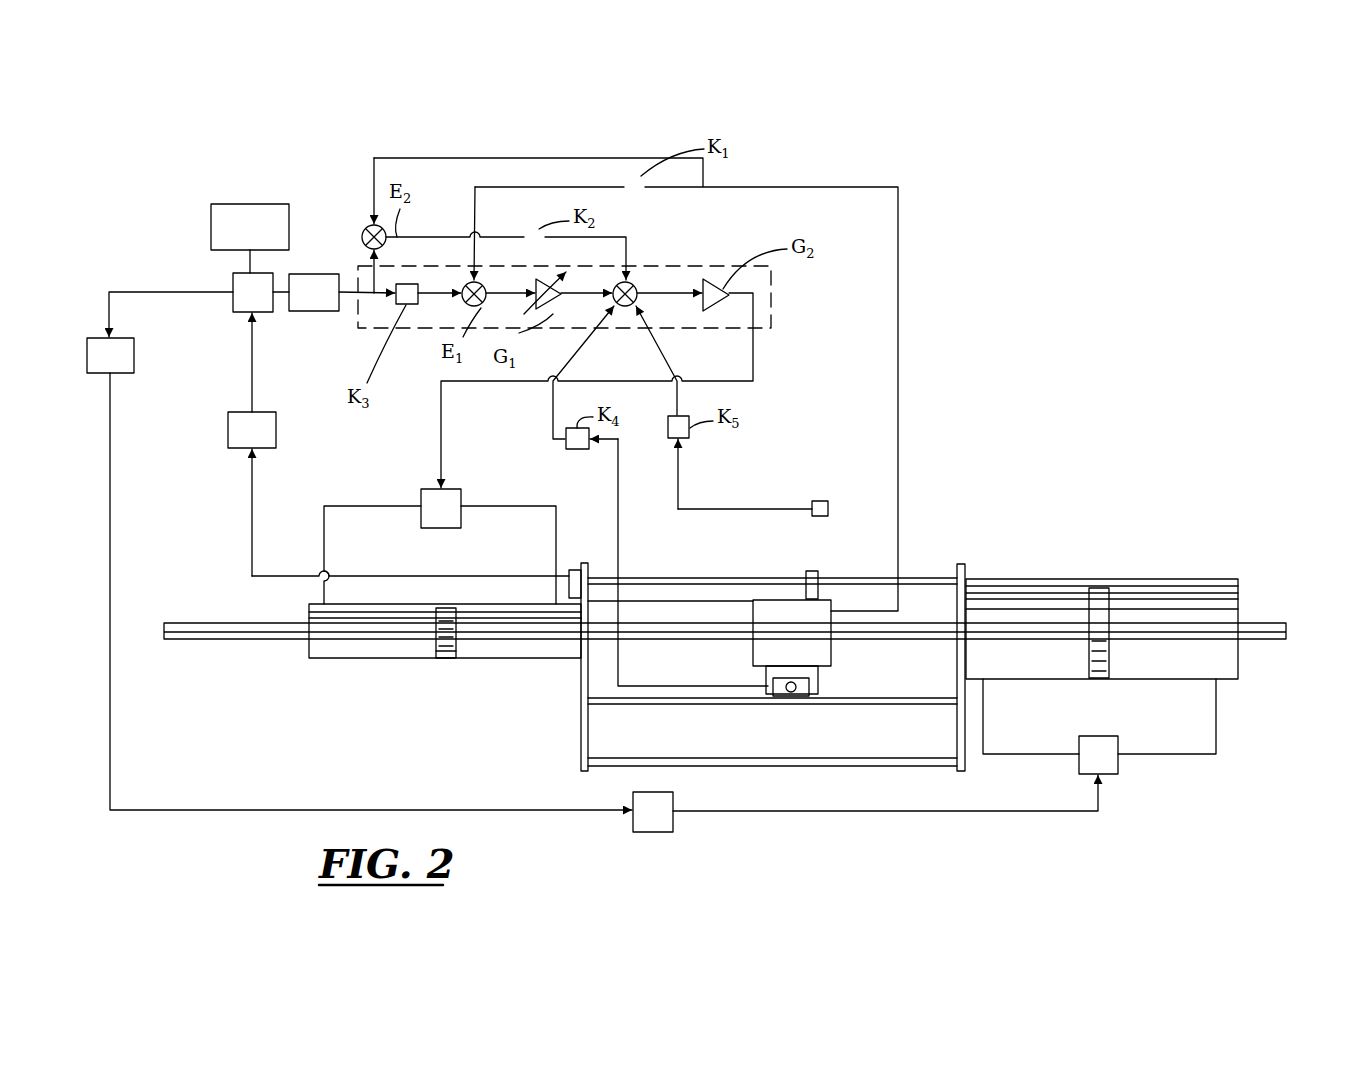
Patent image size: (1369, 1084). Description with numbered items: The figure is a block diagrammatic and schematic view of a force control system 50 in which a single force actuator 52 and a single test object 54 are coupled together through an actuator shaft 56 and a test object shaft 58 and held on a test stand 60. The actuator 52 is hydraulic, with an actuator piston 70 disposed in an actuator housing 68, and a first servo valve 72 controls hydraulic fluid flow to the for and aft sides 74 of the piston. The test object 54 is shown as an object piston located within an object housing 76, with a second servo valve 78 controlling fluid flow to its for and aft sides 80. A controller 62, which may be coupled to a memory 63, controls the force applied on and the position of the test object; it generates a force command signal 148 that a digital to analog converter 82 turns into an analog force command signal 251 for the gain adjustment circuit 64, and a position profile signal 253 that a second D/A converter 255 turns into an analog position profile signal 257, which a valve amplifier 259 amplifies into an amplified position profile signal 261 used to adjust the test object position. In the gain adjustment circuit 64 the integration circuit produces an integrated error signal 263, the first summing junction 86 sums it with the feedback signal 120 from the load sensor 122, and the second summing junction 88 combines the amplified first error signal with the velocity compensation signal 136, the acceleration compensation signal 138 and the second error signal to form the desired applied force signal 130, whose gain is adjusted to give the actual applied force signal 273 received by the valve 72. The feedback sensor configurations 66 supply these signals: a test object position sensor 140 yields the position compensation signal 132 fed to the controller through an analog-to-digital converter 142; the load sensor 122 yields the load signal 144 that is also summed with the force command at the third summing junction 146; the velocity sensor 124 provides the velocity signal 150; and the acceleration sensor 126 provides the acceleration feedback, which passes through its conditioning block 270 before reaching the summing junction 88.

The force control system 50 is at (997, 214).
The force actuator 52 is at (370, 660).
The test object 54 is at (1098, 590).
The actuator shaft 56 is at (240, 642).
The test object shaft 58 is at (940, 582).
The test stand 60 is at (827, 765).
The controller 62 is at (232, 280).
The data storage 63 is at (245, 202).
The gain adjustment circuit 64 is at (770, 295).
The feedback sensor configurations 66 is at (241, 502).
The actuator housing 68 is at (455, 660).
The actuator piston 70 is at (443, 603).
The first servo valve 72 is at (420, 496).
The for and aft sides of the actuator piston 74 is at (345, 660).
The object housing 76 is at (1180, 680).
The second servo valve 78 is at (1078, 748).
The for and aft sides of the object piston 80 is at (1065, 665).
The digital to analog converter 82 is at (293, 310).
The first summing junction 86 is at (458, 303).
The second summing junction 88 is at (624, 307).
The feedback signal 120 is at (526, 186).
The load sensor 122 is at (832, 655).
The velocity sensor 124 is at (760, 683).
The acceleration sensor 126 is at (822, 500).
The desired applied force signal 130 is at (667, 292).
The position compensation signal 132 is at (245, 560).
The velocity compensation signal 136 is at (552, 414).
The acceleration compensation signal 138 is at (677, 397).
The test object position sensor 140 is at (588, 578).
The analog-to-digital converter 142 is at (275, 431).
The load signal 144 is at (897, 445).
The third summing junction 146 is at (361, 236).
The force command signal 148 is at (280, 288).
The velocity signal 150 is at (617, 605).
The analog force command signal 251 is at (348, 296).
The position profile versus time signal 253 is at (108, 290).
The second D/A converter 255 is at (133, 355).
The analog position profile signal 257 is at (109, 540).
The valve amplifier 259 is at (660, 831).
The amplified position profile signal 261 is at (918, 811).
The integrated error signal 263 is at (437, 291).
The input line 270 is at (682, 456).
The actual applied force signal 273 is at (752, 370).